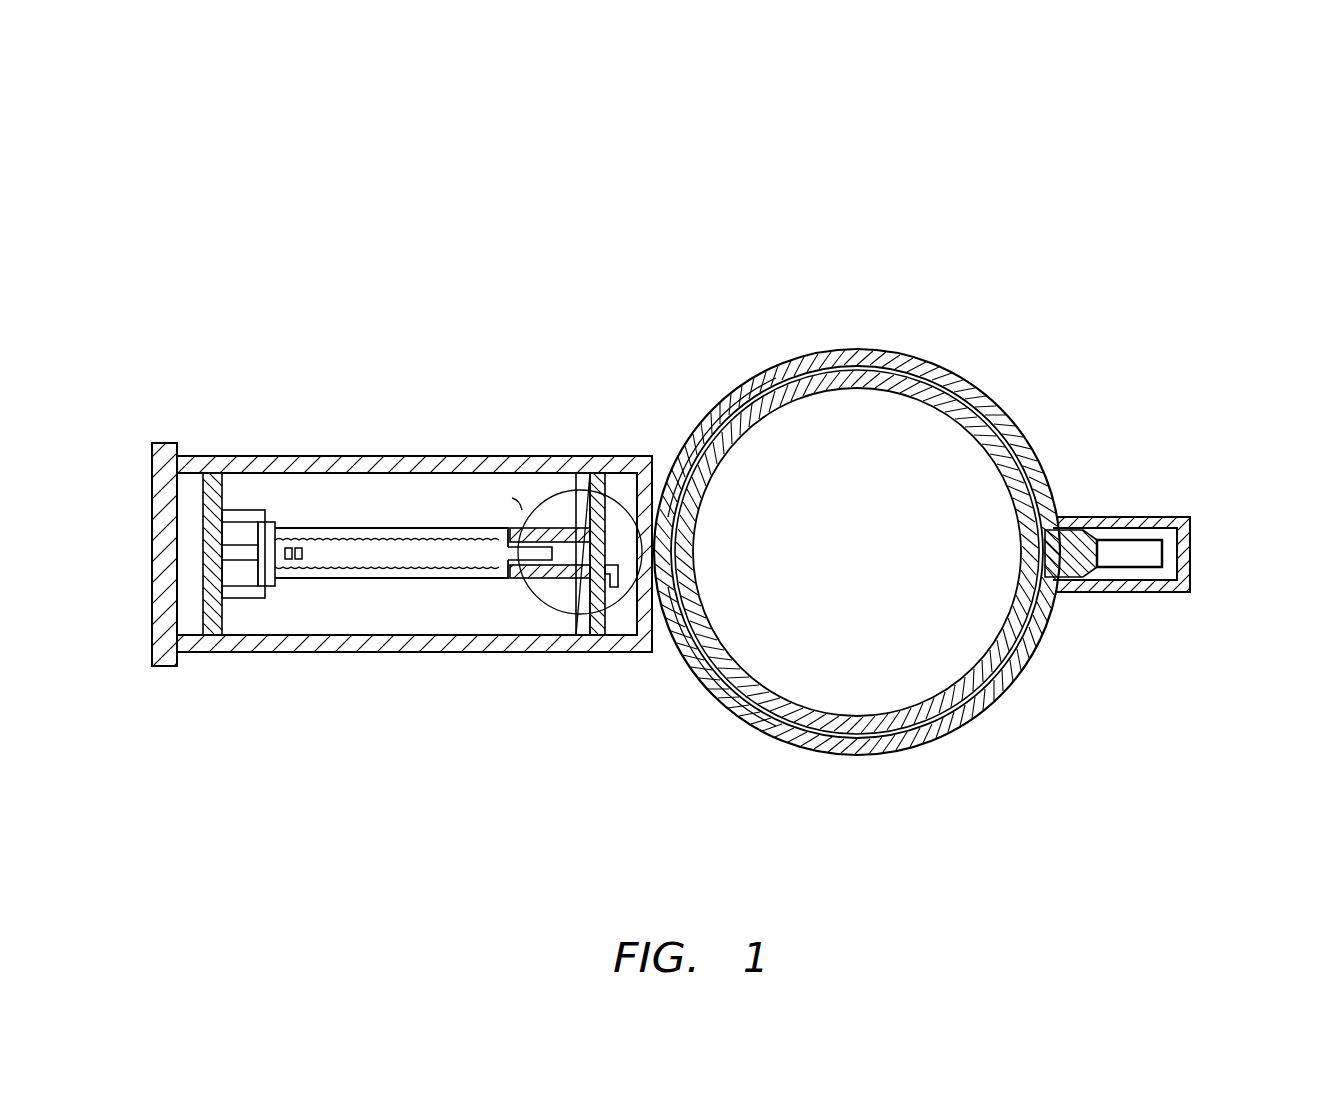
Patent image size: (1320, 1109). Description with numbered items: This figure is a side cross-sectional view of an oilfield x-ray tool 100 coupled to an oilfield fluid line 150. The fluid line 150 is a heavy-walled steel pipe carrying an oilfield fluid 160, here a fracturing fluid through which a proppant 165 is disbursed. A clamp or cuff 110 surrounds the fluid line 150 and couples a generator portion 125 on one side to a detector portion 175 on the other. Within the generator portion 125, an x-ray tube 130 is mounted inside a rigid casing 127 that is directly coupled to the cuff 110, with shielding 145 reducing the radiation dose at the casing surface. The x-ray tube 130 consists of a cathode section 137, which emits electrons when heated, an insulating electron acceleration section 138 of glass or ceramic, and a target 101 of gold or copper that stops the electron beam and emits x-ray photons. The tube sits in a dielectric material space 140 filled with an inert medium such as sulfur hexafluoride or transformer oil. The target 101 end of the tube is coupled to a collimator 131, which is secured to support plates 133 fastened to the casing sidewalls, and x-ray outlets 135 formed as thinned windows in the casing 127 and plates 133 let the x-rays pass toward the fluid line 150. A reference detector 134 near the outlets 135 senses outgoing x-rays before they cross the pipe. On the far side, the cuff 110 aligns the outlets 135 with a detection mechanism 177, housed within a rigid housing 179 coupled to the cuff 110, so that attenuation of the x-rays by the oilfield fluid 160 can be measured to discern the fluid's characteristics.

The oilfield x-ray tool 100 is at (656, 142).
The target 101 is at (552, 547).
The cuff 110 is at (994, 686).
The generator portion 125 is at (243, 331).
The rigid casing 127 is at (430, 462).
The x-ray tube 130 is at (431, 596).
The collimator 131 is at (553, 568).
The support plates 133 is at (576, 478).
The reference detector 134 is at (609, 553).
The x-ray outlets 135 is at (662, 530).
The cathode section 137 is at (314, 550).
The electron acceleration section 138 is at (322, 578).
The dielectric material space 140 is at (373, 618).
The shielding 145 is at (211, 630).
The oilfield fluid line 150 is at (873, 383).
The oilfield fluid 160 is at (837, 667).
The proppant 165 is at (823, 416).
The detector portion 175 is at (1139, 407).
The detection mechanism 177 is at (1065, 562).
The rigid housing 179 is at (1188, 548).